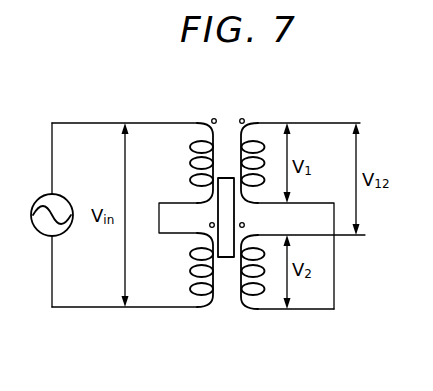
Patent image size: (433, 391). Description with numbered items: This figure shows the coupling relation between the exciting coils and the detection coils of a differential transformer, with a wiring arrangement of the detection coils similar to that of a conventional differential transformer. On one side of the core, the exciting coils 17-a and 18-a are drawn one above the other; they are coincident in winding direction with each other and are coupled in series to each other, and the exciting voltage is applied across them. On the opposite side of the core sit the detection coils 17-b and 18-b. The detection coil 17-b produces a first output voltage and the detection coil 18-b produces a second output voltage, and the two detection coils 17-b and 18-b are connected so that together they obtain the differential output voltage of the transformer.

The exciting coil 17-a is at (195, 140).
The detection coil 17-b is at (258, 140).
The exciting coil 18-a is at (195, 291).
The detection coil 18-b is at (257, 292).